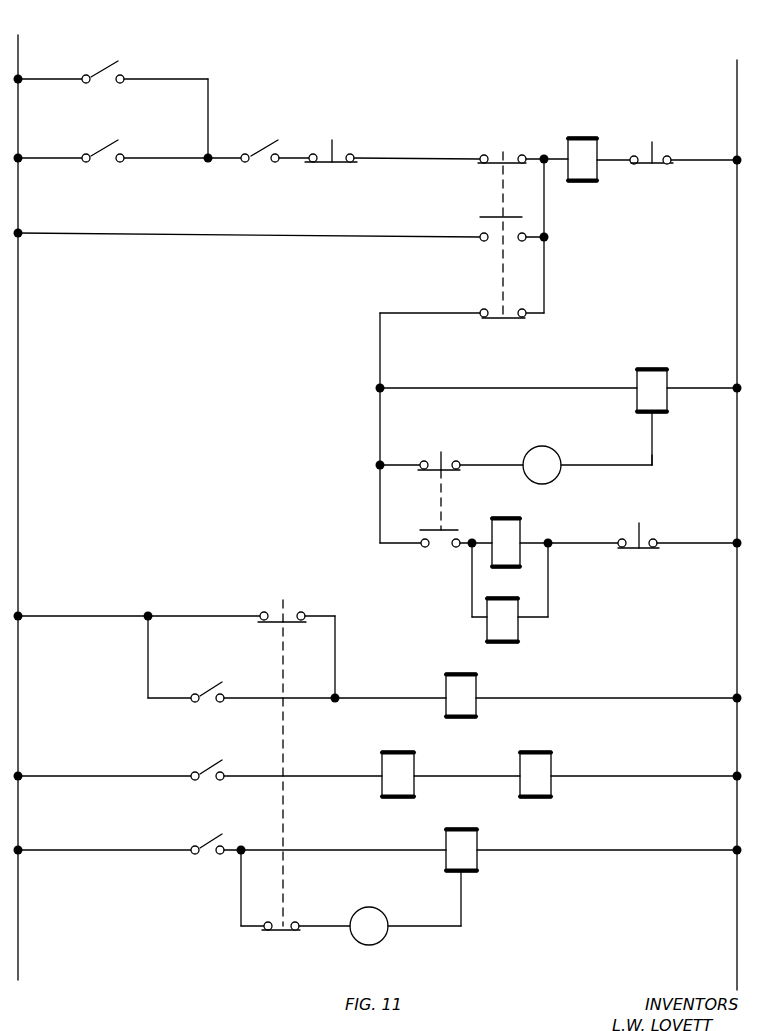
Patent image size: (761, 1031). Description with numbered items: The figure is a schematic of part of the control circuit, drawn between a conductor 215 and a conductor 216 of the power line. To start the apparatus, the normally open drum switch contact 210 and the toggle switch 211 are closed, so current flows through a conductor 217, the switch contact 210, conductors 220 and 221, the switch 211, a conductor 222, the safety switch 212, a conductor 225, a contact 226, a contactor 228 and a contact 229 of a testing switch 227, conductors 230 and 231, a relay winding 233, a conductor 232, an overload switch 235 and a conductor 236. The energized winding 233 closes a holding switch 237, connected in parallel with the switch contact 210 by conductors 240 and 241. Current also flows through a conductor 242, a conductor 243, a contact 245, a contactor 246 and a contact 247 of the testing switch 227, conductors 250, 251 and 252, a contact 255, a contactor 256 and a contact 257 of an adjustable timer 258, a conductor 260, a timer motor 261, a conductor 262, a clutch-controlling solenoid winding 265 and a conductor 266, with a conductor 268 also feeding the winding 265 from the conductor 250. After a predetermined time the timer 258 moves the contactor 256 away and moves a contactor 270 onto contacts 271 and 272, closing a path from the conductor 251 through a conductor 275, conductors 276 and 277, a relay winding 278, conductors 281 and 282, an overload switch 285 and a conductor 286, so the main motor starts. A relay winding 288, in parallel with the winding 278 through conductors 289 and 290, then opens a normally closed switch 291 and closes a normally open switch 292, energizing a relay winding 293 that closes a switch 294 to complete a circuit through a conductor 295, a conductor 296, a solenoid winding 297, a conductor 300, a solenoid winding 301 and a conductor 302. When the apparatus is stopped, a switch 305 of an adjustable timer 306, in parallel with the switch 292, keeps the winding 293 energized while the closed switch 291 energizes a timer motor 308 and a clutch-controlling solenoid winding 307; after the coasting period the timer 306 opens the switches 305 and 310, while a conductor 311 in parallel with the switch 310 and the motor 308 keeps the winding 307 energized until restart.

The conductor of the power line 215 is at (18, 48).
The conductor of the power line 216 is at (737, 85).
The conductor 240 is at (62, 79).
The holding switch 237 is at (124, 62).
The conductor 241 is at (208, 95).
The conductor 217 is at (68, 157).
The drum switch contact 210 is at (105, 158).
The conductor 220 is at (172, 160).
The conductor 221 is at (225, 157).
The toggle switch 211 is at (262, 162).
The conductor 222 is at (300, 160).
The safety switch 212 is at (378, 130).
The conductor 225 is at (437, 161).
The contact of the testing switch 226 is at (484, 155).
The testing switch 227 is at (492, 167).
The contactor of the testing switch 228 is at (513, 163).
The contact of the testing switch 229 is at (522, 155).
The conductor 230 is at (544, 158).
The relay winding 233 is at (618, 130).
The conductor 231 is at (560, 165).
The conductor 232 is at (612, 162).
The overload switch 235 is at (656, 165).
The conductor 236 is at (705, 130).
The conductor 242 is at (548, 222).
The conductor 243 is at (545, 290).
The contact of the testing switch 245 is at (525, 318).
The contactor of the testing switch 246 is at (502, 320).
The contact of the testing switch 247 is at (480, 318).
The conductor 250 is at (380, 347).
The conductor 268 is at (624, 350).
The winding of clutch-controlling solenoid 265 is at (705, 345).
The conductor 266 is at (715, 390).
The conductor 251 is at (380, 425).
The conductor 252 is at (405, 465).
The contact of the timer 255 is at (427, 460).
The contactor of the timer 256 is at (445, 475).
The contact of the timer 257 is at (462, 462).
The conductor 260 is at (515, 445).
The timer motor 261 is at (570, 428).
The conductor 262 is at (652, 430).
The adjustable timer 258 is at (655, 468).
The conductor 275 is at (380, 493).
The contact of the timer 271 is at (421, 550).
The contactor of the timer 270 is at (427, 530).
The contact of the timer 272 is at (460, 550).
The conductor 276 is at (465, 560).
The conductor 277 is at (482, 548).
The relay winding 278 is at (525, 525).
The conductor 281 is at (540, 542).
The conductor 282 is at (598, 540).
The overload switch 285 is at (654, 528).
The conductor 286 is at (715, 548).
The conductor 289 is at (470, 597).
The relay winding 288 is at (518, 625).
The conductor 290 is at (548, 582).
The switch of the timer 305 is at (277, 606).
The relay switch 292 is at (206, 700).
The relay winding 293 is at (476, 686).
The conductor 295 is at (77, 771).
The relay switch 294 is at (205, 775).
The conductor 296 is at (328, 771).
The solenoid winding 297 is at (455, 740).
The conductor 300 is at (495, 778).
The solenoid winding 301 is at (585, 742).
The conductor 302 is at (645, 776).
The relay switch 291 is at (207, 850).
The conductor 311 is at (338, 847).
The clutch-controlling solenoid winding 307 is at (478, 840).
The switch of the timer 310 is at (296, 921).
The timer motor 308 is at (353, 940).
The adjustable timer 306 is at (452, 930).